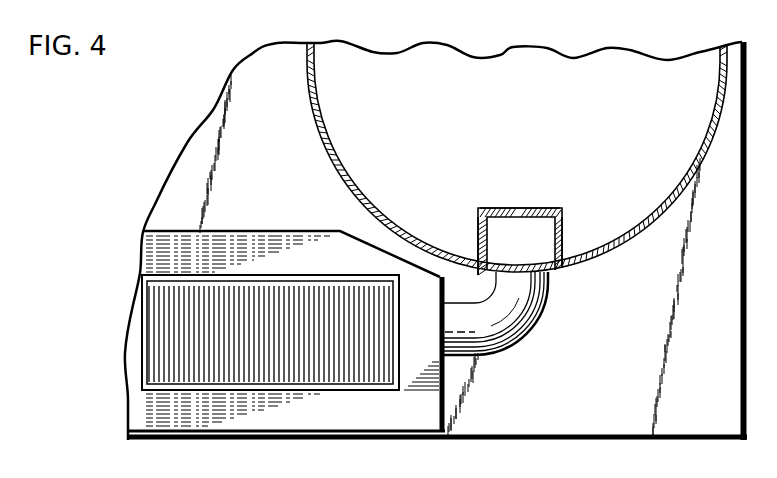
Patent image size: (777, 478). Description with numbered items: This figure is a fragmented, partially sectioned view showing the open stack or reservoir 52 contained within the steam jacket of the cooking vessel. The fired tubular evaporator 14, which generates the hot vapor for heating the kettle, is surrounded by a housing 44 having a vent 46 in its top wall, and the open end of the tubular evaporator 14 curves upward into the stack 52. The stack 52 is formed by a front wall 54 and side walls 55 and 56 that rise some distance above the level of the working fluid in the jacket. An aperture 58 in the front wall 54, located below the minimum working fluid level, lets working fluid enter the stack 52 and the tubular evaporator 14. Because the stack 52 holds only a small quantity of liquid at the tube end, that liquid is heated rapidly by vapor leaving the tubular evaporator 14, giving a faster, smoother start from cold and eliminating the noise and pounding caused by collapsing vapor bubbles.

The tubular evaporator 14 is at (542, 315).
The housing 44 is at (165, 252).
The vent 46 is at (162, 331).
The stack or reservoir 52 is at (572, 235).
The front wall 54 is at (544, 206).
The side wall 55 is at (477, 234).
The side wall 56 is at (563, 222).
The aperture 58 is at (517, 207).